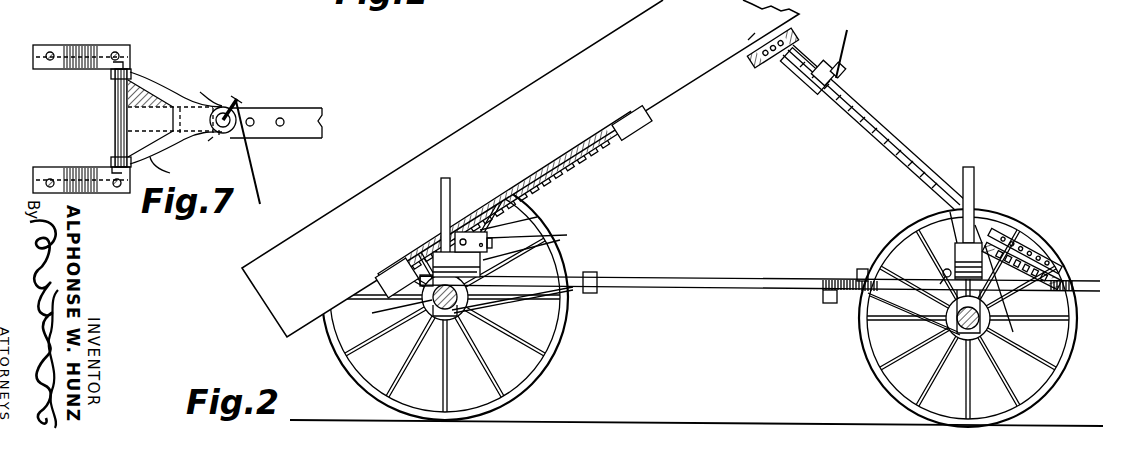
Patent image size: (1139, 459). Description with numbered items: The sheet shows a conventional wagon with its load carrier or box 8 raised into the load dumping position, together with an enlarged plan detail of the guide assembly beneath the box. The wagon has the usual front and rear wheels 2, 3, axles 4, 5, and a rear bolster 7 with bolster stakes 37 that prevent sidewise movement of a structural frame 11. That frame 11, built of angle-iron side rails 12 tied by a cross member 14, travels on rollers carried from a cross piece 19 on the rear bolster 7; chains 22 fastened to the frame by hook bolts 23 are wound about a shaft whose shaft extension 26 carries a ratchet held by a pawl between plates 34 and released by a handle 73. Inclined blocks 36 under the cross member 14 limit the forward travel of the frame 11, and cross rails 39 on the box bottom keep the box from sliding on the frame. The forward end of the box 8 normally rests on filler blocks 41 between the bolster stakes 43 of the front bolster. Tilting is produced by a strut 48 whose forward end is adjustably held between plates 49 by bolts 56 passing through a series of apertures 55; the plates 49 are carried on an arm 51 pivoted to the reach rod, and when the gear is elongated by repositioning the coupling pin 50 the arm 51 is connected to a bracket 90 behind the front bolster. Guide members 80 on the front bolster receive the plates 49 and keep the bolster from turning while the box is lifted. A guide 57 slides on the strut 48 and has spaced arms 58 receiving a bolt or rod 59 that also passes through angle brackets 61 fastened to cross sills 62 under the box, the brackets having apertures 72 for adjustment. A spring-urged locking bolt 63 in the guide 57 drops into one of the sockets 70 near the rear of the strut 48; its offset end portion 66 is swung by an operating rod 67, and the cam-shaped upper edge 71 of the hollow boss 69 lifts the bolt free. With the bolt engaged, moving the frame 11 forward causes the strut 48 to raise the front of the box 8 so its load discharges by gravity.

In FIG. 2, the front wheels 2 is at (870, 363).
In FIG. 2, the rear wheels 3 is at (560, 366).
In FIG. 2, the front axle 4 is at (957, 328).
In FIG. 2, the rear axle 5 is at (440, 304).
In FIG. 2, the rear bolster 7 is at (437, 256).
In FIG. 2, the load carrier or box 8 is at (512, 110).
In FIG. 2, the structural frame 11 is at (561, 140).
In FIG. 2, the side rails 12 is at (597, 134).
In FIG. 2, the cross member 14 is at (400, 272).
In FIG. 2, the cross piece 19 is at (500, 268).
In FIG. 2, the chains 22 is at (566, 185).
In FIG. 2, the hook bolts 23 is at (625, 142).
In FIG. 2, the shaft extension 26 is at (464, 230).
In FIG. 2, the plates 34 is at (540, 241).
In FIG. 2, the blocks or abutments 36 is at (372, 313).
In FIG. 2, the bolster stakes 37 is at (451, 180).
In FIG. 2, the cross rails 39 is at (380, 282).
In FIG. 2, the filler blocks 41 is at (955, 220).
In FIG. 2, the bolster stakes 43 is at (970, 180).
In FIG. 7, the strut 48 is at (308, 108).
In FIG. 2, the strut 48 is at (903, 148).
In FIG. 2, the plates 49 is at (1043, 287).
In FIG. 2, the coupling bolt or pin 50 is at (597, 276).
In FIG. 2, the arm 51 is at (1011, 326).
In FIG. 2, the apertures 55 is at (1017, 250).
In FIG. 2, the bolts 56 is at (1040, 263).
In FIG. 7, the guide 57 is at (200, 92).
In FIG. 2, the guide 57 is at (813, 80).
In FIG. 7, the arms 58 is at (145, 77).
In FIG. 7, the bolt or rod 59 is at (118, 137).
In FIG. 7, the angle brackets 61 is at (100, 45).
In FIG. 2, the cross sills 62 is at (799, 20).
In FIG. 7, the locking bolt 63 is at (223, 134).
In FIG. 7, the offset end portion 66 is at (238, 101).
In FIG. 7, the operating rod 67 is at (262, 199).
In FIG. 2, the operating rod 67 is at (845, 40).
In FIG. 2, the hollow boss 69 is at (824, 64).
In FIG. 7, the sockets or apertures 70 is at (280, 118).
In FIG. 7, the upper cam edge 71 is at (219, 133).
In FIG. 2, the upper cam edge 71 is at (842, 68).
In FIG. 2, the apertures 72 is at (776, 62).
In FIG. 2, the handle 73 is at (530, 221).
In FIG. 2, the guide members 80 is at (1000, 240).
In FIG. 2, the bracket 90 is at (943, 272).